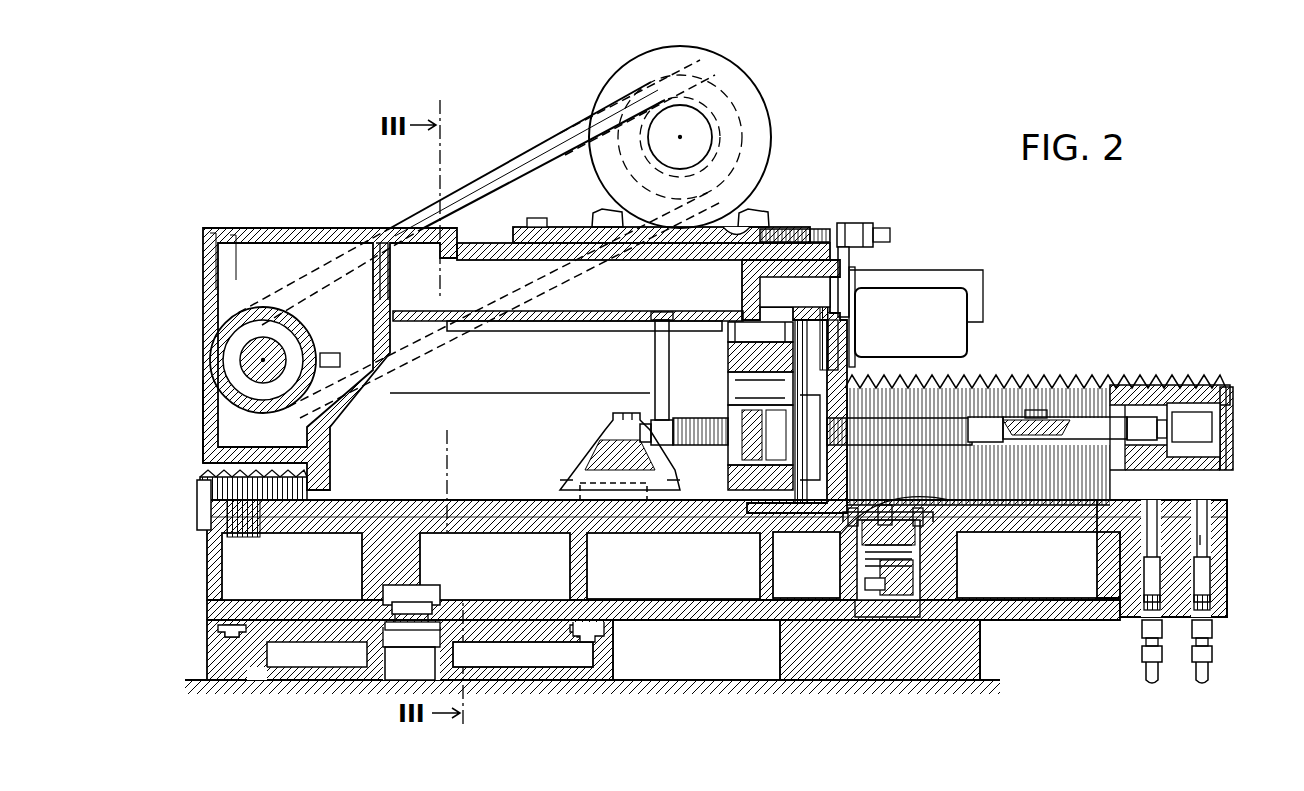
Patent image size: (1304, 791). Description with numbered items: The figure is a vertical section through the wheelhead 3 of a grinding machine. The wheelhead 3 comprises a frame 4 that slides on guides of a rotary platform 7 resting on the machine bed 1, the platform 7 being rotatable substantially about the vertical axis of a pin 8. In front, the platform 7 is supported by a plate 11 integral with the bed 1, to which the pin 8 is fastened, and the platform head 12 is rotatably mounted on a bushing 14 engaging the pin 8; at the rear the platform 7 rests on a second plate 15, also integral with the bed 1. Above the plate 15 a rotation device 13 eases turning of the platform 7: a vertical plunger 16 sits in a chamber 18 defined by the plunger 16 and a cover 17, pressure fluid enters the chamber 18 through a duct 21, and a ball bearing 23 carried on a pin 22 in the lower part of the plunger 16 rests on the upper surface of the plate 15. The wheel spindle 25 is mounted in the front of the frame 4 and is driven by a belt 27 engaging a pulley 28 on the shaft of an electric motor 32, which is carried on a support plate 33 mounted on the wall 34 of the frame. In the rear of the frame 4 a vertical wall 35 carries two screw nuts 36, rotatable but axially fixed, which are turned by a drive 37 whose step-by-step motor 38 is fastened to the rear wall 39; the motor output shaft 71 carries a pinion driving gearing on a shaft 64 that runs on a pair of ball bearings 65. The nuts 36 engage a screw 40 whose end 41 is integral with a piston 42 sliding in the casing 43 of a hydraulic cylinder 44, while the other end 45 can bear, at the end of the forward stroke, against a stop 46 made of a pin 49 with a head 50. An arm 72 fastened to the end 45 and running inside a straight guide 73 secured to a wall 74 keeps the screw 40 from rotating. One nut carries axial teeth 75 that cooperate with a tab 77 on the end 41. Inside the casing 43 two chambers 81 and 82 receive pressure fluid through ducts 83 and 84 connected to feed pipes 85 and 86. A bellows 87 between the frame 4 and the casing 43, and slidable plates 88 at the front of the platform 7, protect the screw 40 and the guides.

The machine bed 1 is at (758, 690).
The wheelhead 3 is at (293, 196).
The frame 4 is at (210, 412).
The rotary platform 7 is at (709, 630).
The pin 8 is at (410, 663).
The plate 11 is at (550, 650).
The platform head 12 is at (428, 605).
The rotation device 13 is at (822, 575).
The bushing 14 is at (368, 592).
The second plate 15 is at (960, 666).
The plunger 16 is at (912, 560).
The cover 17 is at (860, 548).
The chamber 18 is at (905, 537).
The duct 21 is at (930, 518).
The pin 22 is at (975, 646).
The ball bearing 23 is at (880, 617).
The wheel spindle 25 is at (222, 330).
The drive belt 27 is at (495, 190).
The pulley 28 is at (600, 185).
The electric motor 32 is at (735, 95).
The support plate 33 is at (752, 215).
The wall 34 is at (655, 252).
The vertical wall 35 is at (745, 365).
The screw nuts 36 is at (738, 468).
The drive 37 is at (807, 296).
The step-by-step electric motor 38 is at (930, 300).
The rear wall 39 is at (838, 232).
The screw 40 is at (945, 420).
The end of screw 41 is at (1145, 425).
The piston 42 is at (1170, 455).
The casing 43 is at (1190, 392).
The hydraulic cylinder 44 is at (1246, 393).
The other end of screw 45 is at (674, 432).
The stop 46 is at (590, 455).
The pin 49 is at (645, 425).
The head 50 is at (640, 472).
The shaft 64 is at (760, 300).
The ball bearings 65 is at (745, 318).
The output shaft 71 is at (855, 313).
The arm 72 is at (670, 375).
The straight guide 73 is at (522, 328).
The wall 74 is at (568, 312).
The axial teeth 75 is at (826, 448).
The tab 77 is at (1043, 417).
The chamber 81 is at (1205, 437).
The chamber 82 is at (1100, 505).
The duct 83 is at (1232, 455).
The duct 84 is at (1125, 505).
The feed pipe 85 is at (1205, 673).
The feed pipe 86 is at (1145, 675).
The bellows 87 is at (1030, 371).
The slidable plates 88 is at (203, 463).